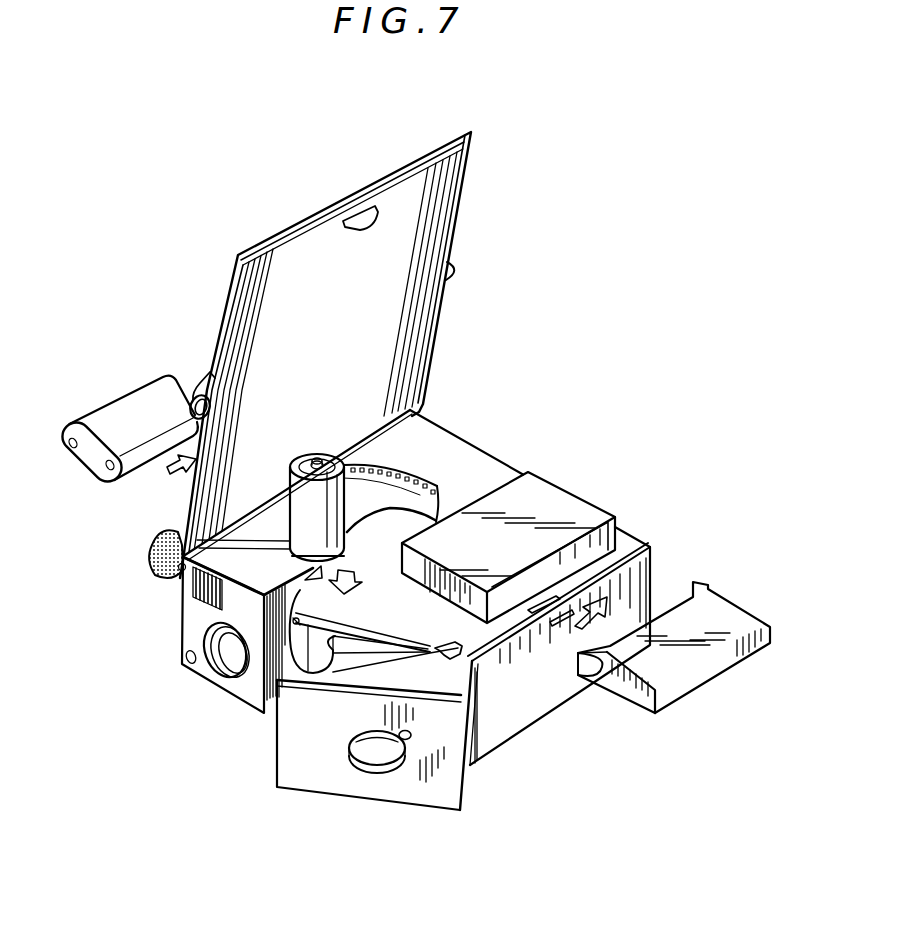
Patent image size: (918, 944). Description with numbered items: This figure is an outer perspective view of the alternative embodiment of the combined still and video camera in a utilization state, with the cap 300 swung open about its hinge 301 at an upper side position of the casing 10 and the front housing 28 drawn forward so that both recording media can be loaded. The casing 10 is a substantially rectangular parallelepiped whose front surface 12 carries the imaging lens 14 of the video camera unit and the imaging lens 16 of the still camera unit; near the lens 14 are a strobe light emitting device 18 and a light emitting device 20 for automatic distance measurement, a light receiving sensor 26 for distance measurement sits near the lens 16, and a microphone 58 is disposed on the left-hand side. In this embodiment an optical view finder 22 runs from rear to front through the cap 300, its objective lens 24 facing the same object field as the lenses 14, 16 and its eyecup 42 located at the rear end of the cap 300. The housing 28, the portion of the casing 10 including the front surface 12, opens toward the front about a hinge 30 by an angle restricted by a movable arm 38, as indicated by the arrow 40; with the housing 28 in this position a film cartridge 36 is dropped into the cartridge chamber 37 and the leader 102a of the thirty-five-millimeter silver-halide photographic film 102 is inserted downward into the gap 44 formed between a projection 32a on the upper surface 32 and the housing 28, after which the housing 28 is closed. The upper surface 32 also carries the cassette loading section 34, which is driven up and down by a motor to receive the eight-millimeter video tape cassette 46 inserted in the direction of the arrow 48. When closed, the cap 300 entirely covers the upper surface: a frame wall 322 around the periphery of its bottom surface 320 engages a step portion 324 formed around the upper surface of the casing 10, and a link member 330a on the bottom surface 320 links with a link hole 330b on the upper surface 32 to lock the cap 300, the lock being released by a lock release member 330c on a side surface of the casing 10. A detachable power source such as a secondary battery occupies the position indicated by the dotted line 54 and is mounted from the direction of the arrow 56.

The casing 10 is at (222, 527).
The front surface 12 is at (185, 632).
The imaging lens 14 is at (215, 662).
The imaging lens 16 is at (383, 758).
The strobe light emitting device 18 is at (198, 590).
The light emitting device 20 is at (186, 660).
The optical view finder 22 is at (204, 384).
The objective lens 24 is at (190, 415).
The light receiving sensor 26 is at (476, 765).
The housing 28 is at (314, 777).
The hinge 30 is at (458, 652).
The upper surface 32 is at (420, 417).
The projection 32a is at (305, 590).
The cassette loading section 34 is at (548, 487).
The film cartridge 36 is at (291, 515).
The cartridge chamber 37 is at (306, 672).
The movable arm 38 is at (292, 622).
The arrow 40 is at (356, 586).
The eyecup 42 is at (460, 273).
The gap 44 is at (384, 634).
The video tape cassette 46 is at (637, 708).
The arrow 48 is at (580, 617).
The power source position 54 is at (132, 386).
The arrow 56 is at (165, 468).
The microphone 58 is at (160, 540).
The photographic film 102 is at (338, 458).
The leader 102a is at (432, 484).
The cap 300 is at (455, 237).
The hinge 301 is at (176, 569).
The bottom surface 320 is at (383, 363).
The frame wall 322 is at (470, 173).
The step portion 324 is at (652, 577).
The link member 330a is at (362, 229).
The link hole 330b is at (520, 643).
The lock release member 330c is at (597, 588).